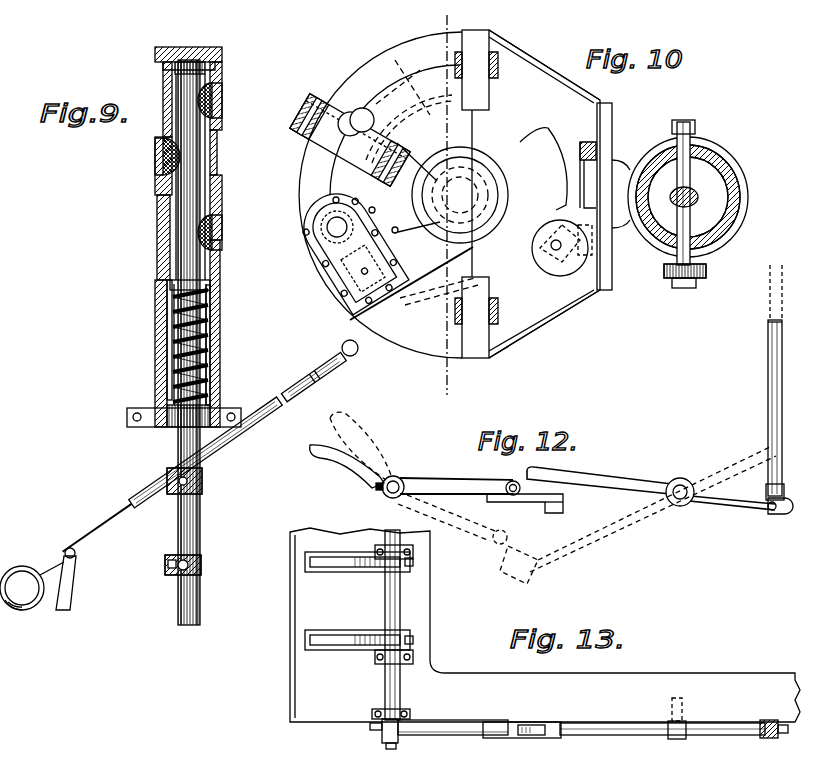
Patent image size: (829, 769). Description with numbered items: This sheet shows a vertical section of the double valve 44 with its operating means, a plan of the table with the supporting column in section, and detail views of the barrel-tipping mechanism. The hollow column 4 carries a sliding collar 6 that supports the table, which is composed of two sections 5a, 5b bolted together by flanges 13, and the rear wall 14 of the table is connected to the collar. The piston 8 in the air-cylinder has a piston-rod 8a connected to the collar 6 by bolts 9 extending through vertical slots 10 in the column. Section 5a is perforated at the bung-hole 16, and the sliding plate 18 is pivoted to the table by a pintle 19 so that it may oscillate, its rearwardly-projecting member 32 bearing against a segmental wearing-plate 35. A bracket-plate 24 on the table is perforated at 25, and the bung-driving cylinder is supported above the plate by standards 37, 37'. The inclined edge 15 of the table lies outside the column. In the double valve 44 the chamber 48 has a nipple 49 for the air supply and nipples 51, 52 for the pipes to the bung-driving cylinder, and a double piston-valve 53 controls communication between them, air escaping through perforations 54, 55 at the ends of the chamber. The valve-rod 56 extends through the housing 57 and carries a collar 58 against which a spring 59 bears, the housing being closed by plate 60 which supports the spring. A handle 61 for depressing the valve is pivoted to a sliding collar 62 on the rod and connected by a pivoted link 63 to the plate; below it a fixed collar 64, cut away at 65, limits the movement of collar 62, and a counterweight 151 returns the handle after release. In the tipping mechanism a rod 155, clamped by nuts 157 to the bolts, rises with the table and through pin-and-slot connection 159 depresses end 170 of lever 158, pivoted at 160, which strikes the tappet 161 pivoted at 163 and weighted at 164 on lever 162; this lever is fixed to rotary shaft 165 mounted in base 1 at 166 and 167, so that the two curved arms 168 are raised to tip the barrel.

In FIG. 13, the base 1 is at (423, 602).
In FIG. 10, the hollow column 4 is at (660, 240).
In FIG. 10, the table section 5a is at (388, 195).
In FIG. 10, the table section 5b is at (544, 194).
In FIG. 10, the sliding collar 6 is at (748, 197).
In FIG. 10, the piston 8 is at (456, 204).
In FIG. 10, the piston-rod 8a is at (691, 202).
In FIG. 10, the bolts 9 is at (700, 178).
In FIG. 10, the vertical slots 10 is at (690, 148).
In FIG. 10, the flanges 13 is at (478, 30).
In FIG. 10, the rear wall 14 is at (612, 130).
In FIG. 10, the inclined edge 15 is at (548, 62).
In FIG. 10, the bung-hole 16 is at (300, 204).
In FIG. 10, the sliding plate 18 is at (411, 271).
In FIG. 10, the pintle 19 is at (460, 195).
In FIG. 10, the bracket-plate 24 is at (380, 55).
In FIG. 10, the perforation 25 is at (355, 116).
In FIG. 10, the rearwardly-projecting member 32 is at (540, 238).
In FIG. 10, the segmental wearing-plate 35 is at (548, 140).
In FIG. 10, the standard 37 is at (339, 137).
In FIG. 10, the standard 37' is at (429, 170).
In FIG. 9, the double valve 44 is at (188, 232).
In FIG. 9, the valve-chamber 48 is at (165, 95).
In FIG. 9, the nipple 49 is at (156, 156).
In FIG. 9, the nipple 51 is at (220, 100).
In FIG. 9, the nipple 52 is at (214, 240).
In FIG. 9, the double piston-valve 53 is at (215, 46).
In FIG. 9, the perforation 54 is at (190, 47).
In FIG. 9, the perforation 55 is at (170, 290).
In FIG. 9, the valve-rod 56 is at (206, 335).
In FIG. 9, the housing 57 is at (213, 378).
In FIG. 9, the collar 58 is at (208, 285).
In FIG. 9, the spring 59 is at (209, 345).
In FIG. 9, the plate 60 is at (165, 427).
In FIG. 9, the handle 61 is at (245, 456).
In FIG. 9, the sliding collar 62 is at (202, 483).
In FIG. 9, the pivoted link 63 is at (66, 585).
In FIG. 9, the fixed collar 64 is at (201, 565).
In FIG. 9, the cut-away 65 is at (168, 565).
In FIG. 9, the counterweight 151 is at (24, 566).
In FIG. 12, the rod 155 is at (768, 383).
In FIG. 13, the rod 155 is at (768, 739).
In FIG. 10, the nuts 157 is at (690, 280).
In FIG. 12, the lever 158 is at (630, 482).
In FIG. 13, the lever 158 is at (616, 735).
In FIG. 12, the pin-and-slot connection 159 is at (774, 516).
In FIG. 12, the pivot 160 is at (683, 500).
In FIG. 13, the pivot 160 is at (678, 739).
In FIG. 12, the tappet 161 is at (535, 503).
In FIG. 13, the tappet 161 is at (527, 739).
In FIG. 12, the lever 162 is at (450, 466).
In FIG. 13, the lever 162 is at (458, 737).
In FIG. 12, the pivot 163 is at (508, 481).
In FIG. 12, the weight 164 is at (563, 508).
In FIG. 13, the rotary shaft 165 is at (385, 605).
In FIG. 13, the bearing 166 is at (413, 657).
In FIG. 13, the bearing 167 is at (413, 552).
In FIG. 12, the curved arms 168 is at (340, 455).
In FIG. 13, the curved arms 168 is at (330, 643).
In FIG. 12, the end of lever 170 is at (595, 466).